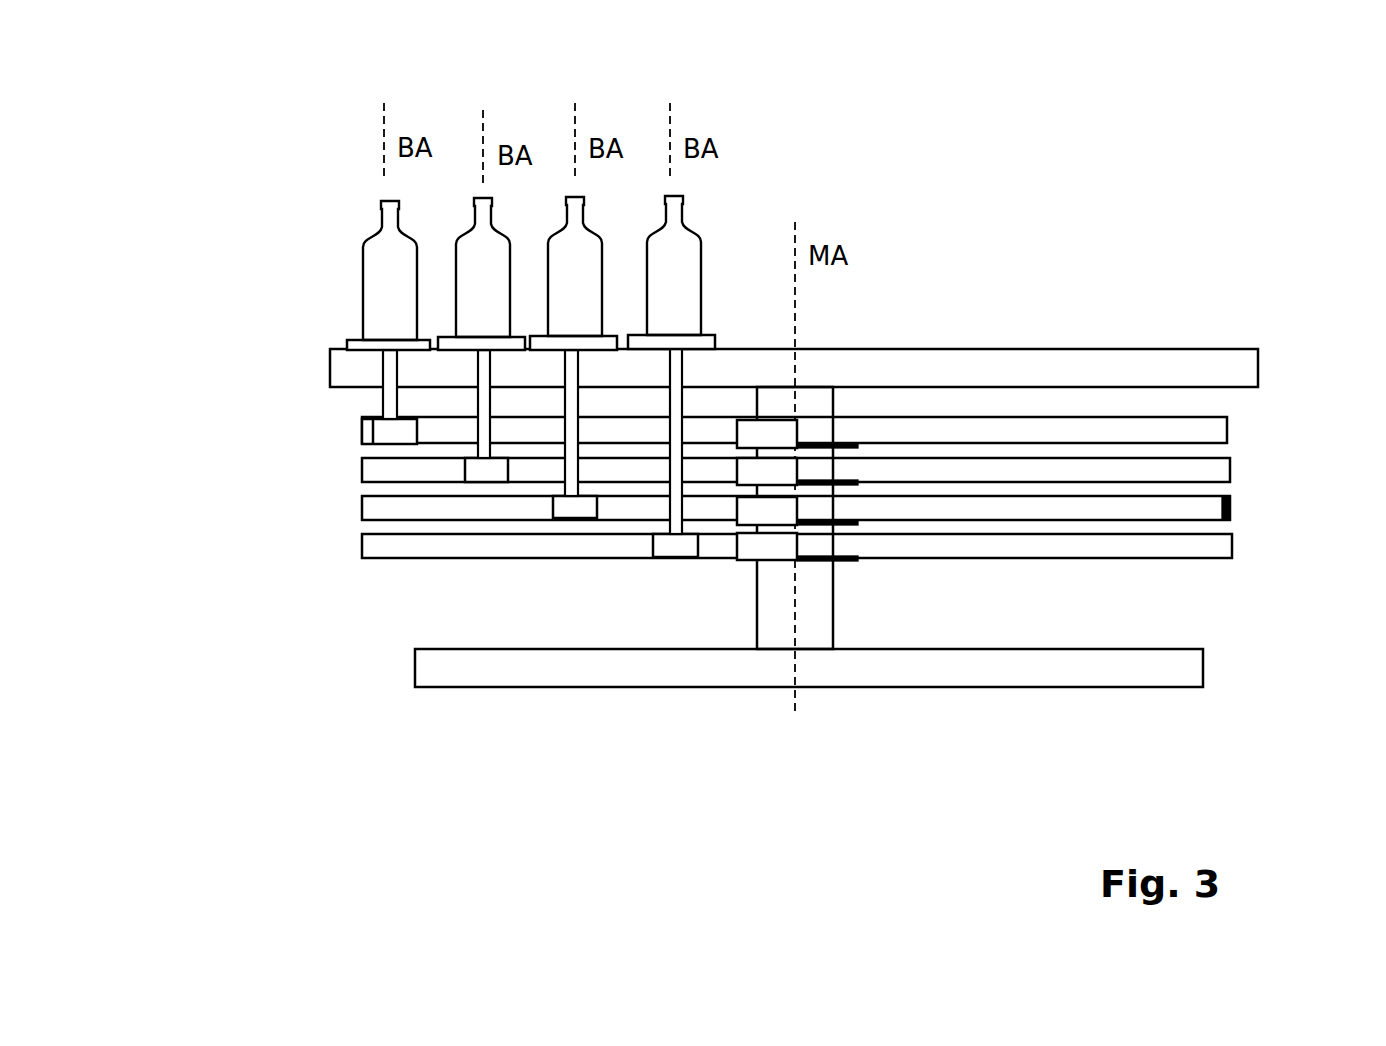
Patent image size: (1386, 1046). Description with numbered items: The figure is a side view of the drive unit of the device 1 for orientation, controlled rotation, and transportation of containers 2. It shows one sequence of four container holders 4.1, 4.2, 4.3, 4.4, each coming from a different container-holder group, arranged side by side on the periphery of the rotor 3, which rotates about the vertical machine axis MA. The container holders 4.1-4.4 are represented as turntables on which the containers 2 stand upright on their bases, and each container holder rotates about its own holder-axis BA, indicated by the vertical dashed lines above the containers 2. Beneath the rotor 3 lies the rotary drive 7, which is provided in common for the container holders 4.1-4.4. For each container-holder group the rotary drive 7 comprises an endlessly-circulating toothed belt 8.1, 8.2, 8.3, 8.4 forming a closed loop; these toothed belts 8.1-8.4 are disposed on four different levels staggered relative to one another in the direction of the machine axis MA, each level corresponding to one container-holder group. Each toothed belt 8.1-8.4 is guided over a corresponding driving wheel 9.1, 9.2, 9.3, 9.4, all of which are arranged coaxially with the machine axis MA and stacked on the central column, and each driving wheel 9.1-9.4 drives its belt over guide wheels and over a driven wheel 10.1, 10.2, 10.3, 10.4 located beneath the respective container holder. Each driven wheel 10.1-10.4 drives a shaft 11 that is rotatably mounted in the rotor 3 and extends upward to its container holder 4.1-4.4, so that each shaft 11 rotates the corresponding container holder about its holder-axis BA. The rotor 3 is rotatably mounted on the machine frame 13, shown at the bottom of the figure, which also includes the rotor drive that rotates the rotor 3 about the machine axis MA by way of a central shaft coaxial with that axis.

The device 1 is at (1112, 230).
The containers 2 is at (363, 267).
The rotor 3 is at (993, 349).
The first container holder 4.1 is at (347, 347).
The second container holder 4.2 is at (455, 348).
The third container holder 4.3 is at (598, 346).
The fourth container holder 4.4 is at (627, 345).
The rotary drive 7 is at (300, 492).
The toothed belt 8.1 is at (1230, 430).
The toothed belt 8.2 is at (1230, 468).
The toothed belt 8.3 is at (1230, 507).
The toothed belt 8.4 is at (1232, 540).
The driving wheel 9.1 is at (757, 435).
The driving wheel 9.2 is at (772, 472).
The driving wheel 9.3 is at (777, 512).
The driving wheel 9.4 is at (778, 550).
The driven wheel 10.1 is at (370, 433).
The driven wheel 10.2 is at (484, 465).
The driven wheel 10.3 is at (556, 503).
The driven wheel 10.4 is at (675, 560).
The shaft 11 is at (388, 370).
The machine frame 13 is at (783, 617).